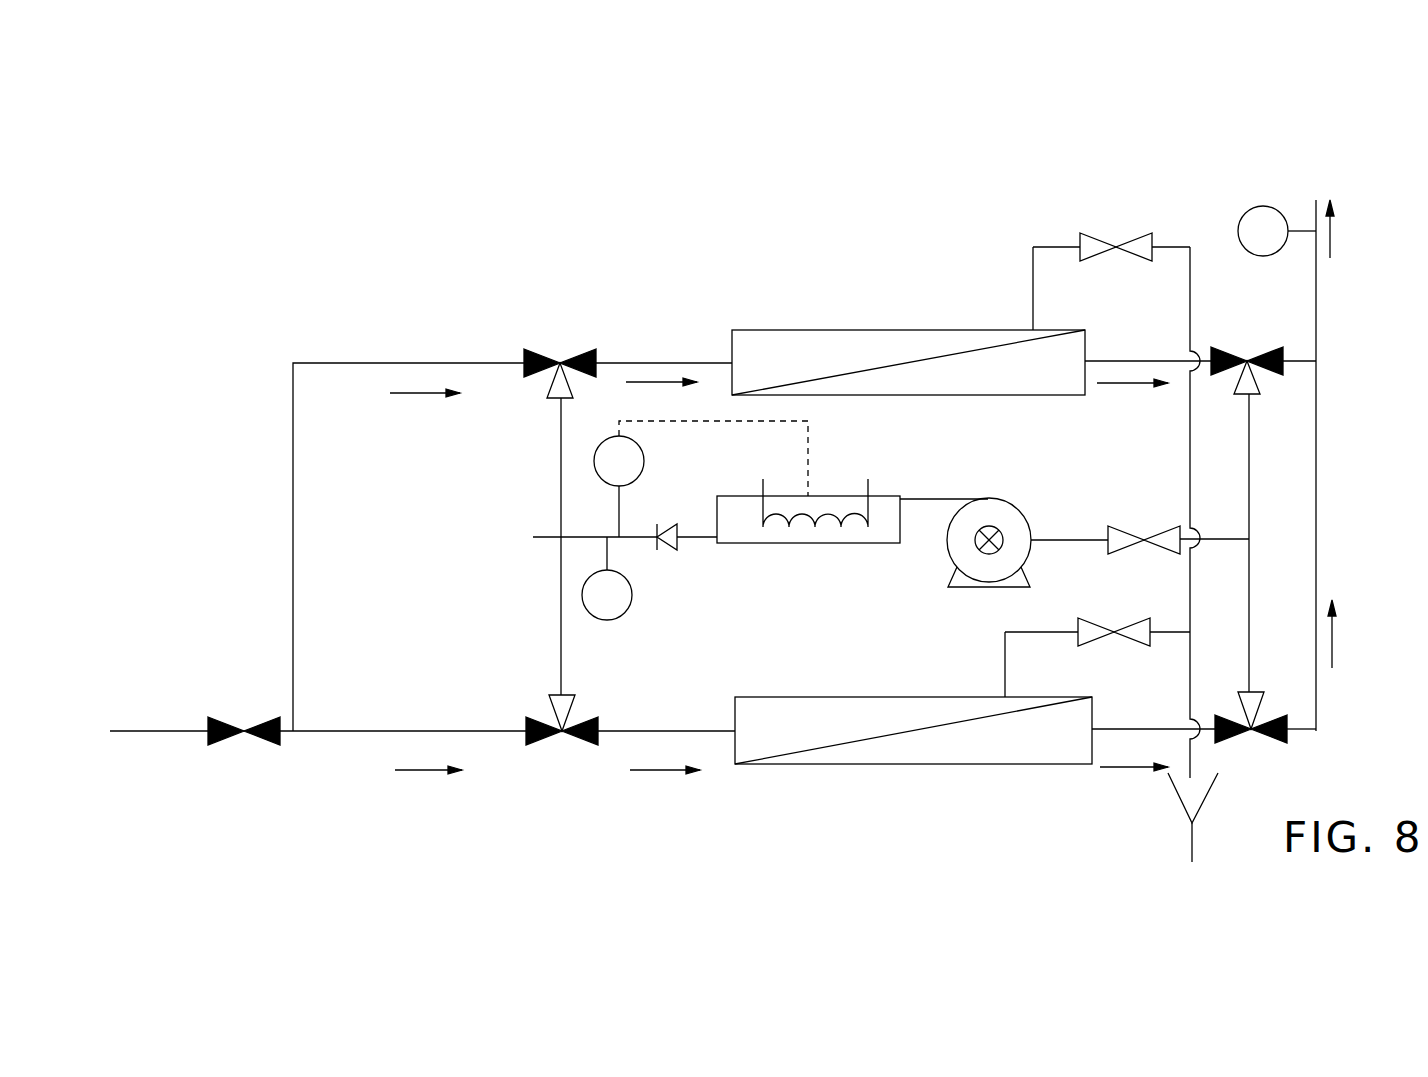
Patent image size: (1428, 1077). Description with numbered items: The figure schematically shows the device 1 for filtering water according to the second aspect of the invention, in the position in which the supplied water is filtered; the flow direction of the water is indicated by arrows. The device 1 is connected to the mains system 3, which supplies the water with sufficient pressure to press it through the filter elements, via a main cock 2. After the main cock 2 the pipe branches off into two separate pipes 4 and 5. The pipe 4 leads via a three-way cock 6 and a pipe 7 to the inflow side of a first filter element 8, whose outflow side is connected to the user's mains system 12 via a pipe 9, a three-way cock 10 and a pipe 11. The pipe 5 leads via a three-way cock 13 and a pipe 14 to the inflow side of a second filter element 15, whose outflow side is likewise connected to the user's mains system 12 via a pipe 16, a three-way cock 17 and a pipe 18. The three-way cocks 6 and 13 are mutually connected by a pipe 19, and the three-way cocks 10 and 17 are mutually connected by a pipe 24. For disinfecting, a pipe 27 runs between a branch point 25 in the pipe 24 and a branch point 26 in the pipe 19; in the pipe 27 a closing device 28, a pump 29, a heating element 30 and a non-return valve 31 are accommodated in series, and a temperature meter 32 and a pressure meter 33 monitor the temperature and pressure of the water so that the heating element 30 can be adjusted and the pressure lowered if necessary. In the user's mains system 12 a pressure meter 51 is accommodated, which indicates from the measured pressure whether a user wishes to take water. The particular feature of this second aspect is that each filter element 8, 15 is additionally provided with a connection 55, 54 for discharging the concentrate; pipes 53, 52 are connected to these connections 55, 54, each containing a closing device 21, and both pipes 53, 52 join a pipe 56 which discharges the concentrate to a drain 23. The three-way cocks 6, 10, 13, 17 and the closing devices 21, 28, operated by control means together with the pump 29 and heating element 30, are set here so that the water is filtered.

The device 1 is at (662, 154).
The main cock 2 is at (228, 727).
The mains system 3 is at (128, 731).
The pipe 4 is at (357, 731).
The pipe 5 is at (293, 447).
The three-way cock 6 is at (563, 735).
The pipe 7 is at (662, 731).
The first filter element 8 is at (865, 697).
The pipe 9 is at (1135, 729).
The three-way cock 10 is at (1255, 733).
The pipe 11 is at (1316, 515).
The user's mains system 12 is at (1316, 288).
The three-way cock 13 is at (554, 360).
The pipe 14 is at (664, 363).
The second filter element 15 is at (878, 330).
The pipe 16 is at (1125, 361).
The three-way cock 17 is at (1248, 358).
The pipe 18 is at (1293, 358).
The pipe 19 is at (561, 455).
The closing device 21 is at (1120, 247).
The drain 23 is at (1200, 812).
The pipe 24 is at (1249, 478).
The recirculation line 25 is at (1250, 539).
The branch point 26 is at (562, 537).
The pipe 27 is at (1055, 540).
The closing device 28 is at (1140, 540).
The pump 29 is at (985, 498).
The heating element 30 is at (835, 543).
The non-return valve 31 is at (668, 552).
The temperature meter 32 is at (644, 465).
The pressure meter 33 is at (630, 610).
The pressure meter 51 is at (1245, 215).
The pipe 52 is at (1165, 245).
The pipe 53 is at (1165, 630).
The connection 54 is at (1033, 328).
The connection 55 is at (1005, 695).
The pipe 56 is at (1190, 455).